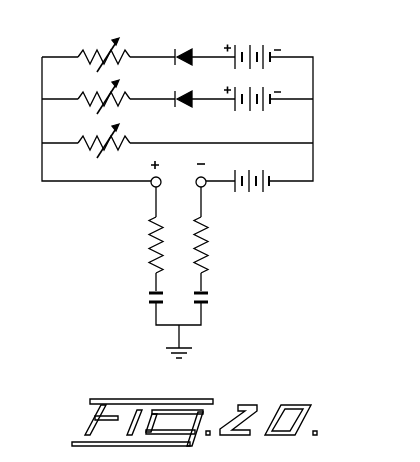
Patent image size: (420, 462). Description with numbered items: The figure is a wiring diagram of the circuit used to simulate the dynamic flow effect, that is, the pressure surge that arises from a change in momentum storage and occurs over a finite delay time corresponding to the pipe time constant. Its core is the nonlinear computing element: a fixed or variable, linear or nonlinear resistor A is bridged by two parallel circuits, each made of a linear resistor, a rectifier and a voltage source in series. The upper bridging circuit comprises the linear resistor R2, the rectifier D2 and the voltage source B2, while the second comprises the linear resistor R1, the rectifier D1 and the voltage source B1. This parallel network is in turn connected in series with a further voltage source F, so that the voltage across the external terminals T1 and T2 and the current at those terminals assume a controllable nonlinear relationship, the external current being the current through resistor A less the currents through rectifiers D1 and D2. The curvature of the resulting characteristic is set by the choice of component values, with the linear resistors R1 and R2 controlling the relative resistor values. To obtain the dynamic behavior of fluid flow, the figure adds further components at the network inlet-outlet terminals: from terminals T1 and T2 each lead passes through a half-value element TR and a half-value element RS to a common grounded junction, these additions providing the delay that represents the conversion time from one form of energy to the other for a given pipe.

The linear resistor R2 is at (131, 49).
The linear resistor R1 is at (129, 93).
The resistor A is at (127, 138).
The rectifier D2 is at (185, 52).
The rectifier D1 is at (184, 95).
The voltage source B2 is at (267, 50).
The voltage source B1 is at (270, 96).
The voltage source F is at (265, 172).
The external terminal T1 is at (143, 183).
The external terminal T2 is at (210, 186).
The resistor half TR is at (90, 220).
The capacitor half RS is at (80, 312).